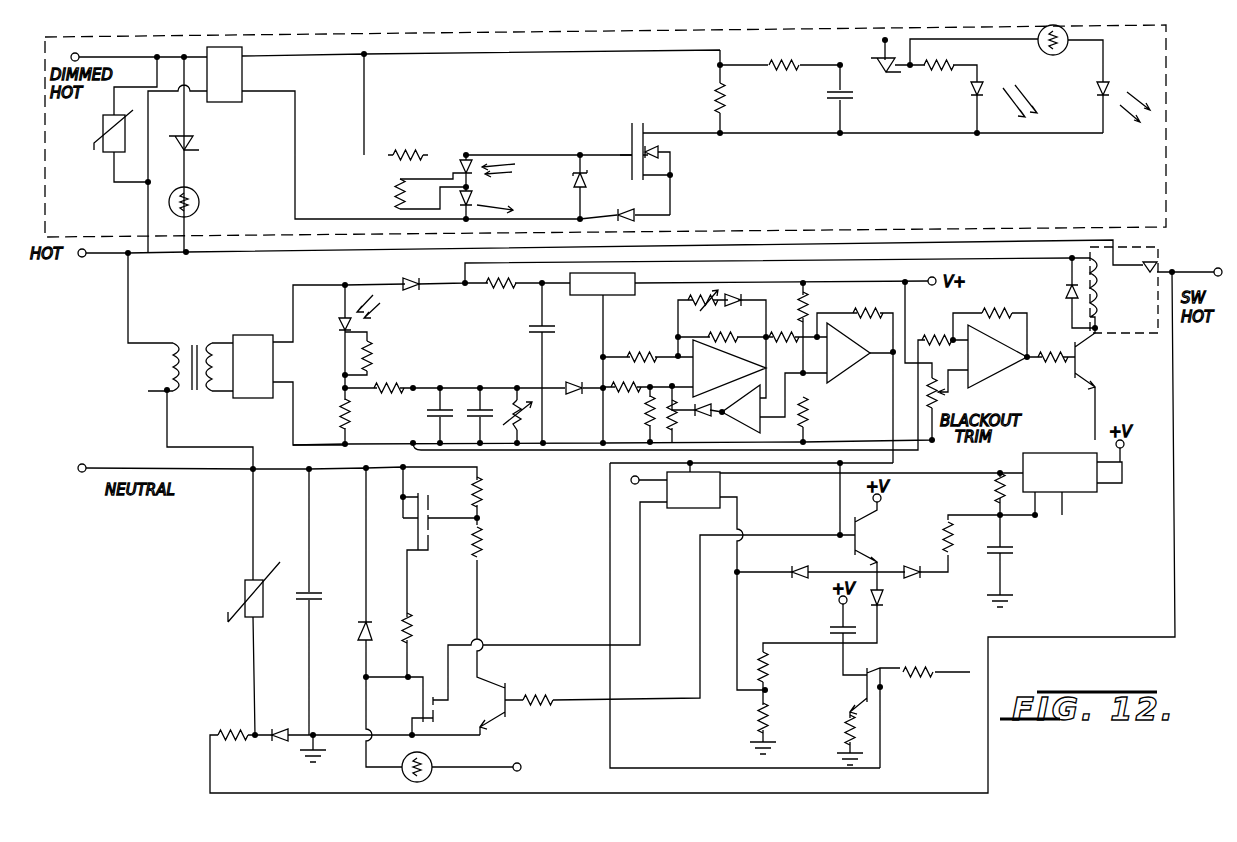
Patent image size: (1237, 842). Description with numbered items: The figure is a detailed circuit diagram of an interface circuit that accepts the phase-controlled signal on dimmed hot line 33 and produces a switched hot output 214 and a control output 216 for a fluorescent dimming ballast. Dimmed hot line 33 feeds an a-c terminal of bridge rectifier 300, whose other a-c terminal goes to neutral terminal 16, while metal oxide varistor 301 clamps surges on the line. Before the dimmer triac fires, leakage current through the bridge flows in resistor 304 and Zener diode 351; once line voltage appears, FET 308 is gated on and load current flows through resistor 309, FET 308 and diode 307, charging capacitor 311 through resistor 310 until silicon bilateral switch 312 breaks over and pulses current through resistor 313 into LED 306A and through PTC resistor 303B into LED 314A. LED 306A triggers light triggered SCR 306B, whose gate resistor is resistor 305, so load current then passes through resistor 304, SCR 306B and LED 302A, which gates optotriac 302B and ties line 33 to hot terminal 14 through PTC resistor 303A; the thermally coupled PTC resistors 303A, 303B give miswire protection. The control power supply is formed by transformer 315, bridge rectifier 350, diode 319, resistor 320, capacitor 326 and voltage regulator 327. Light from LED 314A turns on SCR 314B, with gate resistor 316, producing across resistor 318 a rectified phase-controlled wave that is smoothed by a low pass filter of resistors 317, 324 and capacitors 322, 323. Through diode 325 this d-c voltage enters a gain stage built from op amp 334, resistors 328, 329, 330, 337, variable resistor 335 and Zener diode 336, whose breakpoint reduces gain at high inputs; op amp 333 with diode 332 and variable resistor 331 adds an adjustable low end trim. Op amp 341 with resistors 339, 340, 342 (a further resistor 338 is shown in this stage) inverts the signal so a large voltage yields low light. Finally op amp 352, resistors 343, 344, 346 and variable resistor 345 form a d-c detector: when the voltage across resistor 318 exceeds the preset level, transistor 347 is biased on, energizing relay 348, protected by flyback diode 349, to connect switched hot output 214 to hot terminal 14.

The dimmed hot line 33 is at (103, 57).
The hot terminal 14 is at (78, 262).
The neutral terminal 16 is at (86, 470).
The switched hot output 214 is at (1205, 258).
The control output 216 is at (479, 767).
The bridge rectifier 300 is at (248, 74).
The metal oxide varistor 301 is at (103, 119).
The LED 302A is at (474, 197).
The optotriac 302B is at (209, 122).
The PTC resistor 303A is at (199, 202).
The PTC resistor 303B is at (1050, 56).
The resistor 304 is at (422, 127).
The gate resistor 305 is at (392, 191).
The LED 306A is at (975, 93).
The light triggered SCR 306B is at (503, 140).
The diode 307 is at (637, 213).
The FET 308 is at (670, 166).
The resistor 309 is at (712, 84).
The resistor 310 is at (796, 78).
The capacitor 311 is at (822, 101).
The silicon bilateral switch 312 is at (869, 80).
The resistor 313 is at (955, 65).
The LED 314A is at (1128, 80).
The light triggered SCR 314B is at (355, 323).
The transformer 315 is at (196, 340).
The gate resistor 316 is at (376, 358).
The resistor 317 is at (383, 396).
The resistor 318 is at (342, 419).
The diode 319 is at (407, 278).
The resistor 320 is at (503, 292).
The capacitor 322 is at (410, 446).
The capacitor 323 is at (470, 412).
The resistor 324 is at (512, 398).
The diode 325 is at (576, 372).
The capacitor 326 is at (525, 329).
The voltage regulator 327 is at (609, 297).
The resistor 328 is at (658, 345).
The resistor 329 is at (629, 377).
The resistor 330 is at (650, 408).
The variable resistor 331 is at (679, 413).
The diode 332 is at (701, 418).
The op amp 333 is at (760, 431).
The op amp 334 is at (724, 380).
The variable resistor 335 is at (709, 288).
The Zener diode 336 is at (740, 292).
The resistor 337 is at (726, 332).
The resistor 338 is at (786, 322).
The resistor 339 is at (808, 406).
The resistor 340 is at (813, 275).
The op amp 341 is at (862, 367).
The resistor 342 is at (871, 310).
The resistor 343 is at (940, 313).
The resistor 344 is at (1008, 304).
The variable resistor 345 is at (952, 395).
The resistor 346 is at (1066, 343).
The transistor 347 is at (1097, 373).
The relay 348 is at (1157, 336).
The diode 349 is at (1062, 293).
The bridge rectifier 350 is at (252, 334).
The Zener diode 351 is at (590, 172).
The op amp 352 is at (1003, 371).